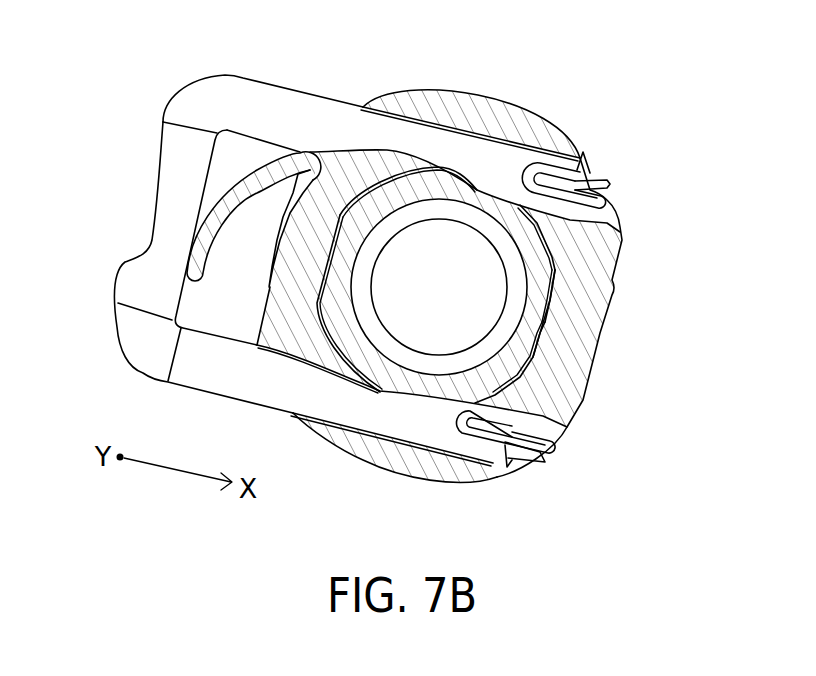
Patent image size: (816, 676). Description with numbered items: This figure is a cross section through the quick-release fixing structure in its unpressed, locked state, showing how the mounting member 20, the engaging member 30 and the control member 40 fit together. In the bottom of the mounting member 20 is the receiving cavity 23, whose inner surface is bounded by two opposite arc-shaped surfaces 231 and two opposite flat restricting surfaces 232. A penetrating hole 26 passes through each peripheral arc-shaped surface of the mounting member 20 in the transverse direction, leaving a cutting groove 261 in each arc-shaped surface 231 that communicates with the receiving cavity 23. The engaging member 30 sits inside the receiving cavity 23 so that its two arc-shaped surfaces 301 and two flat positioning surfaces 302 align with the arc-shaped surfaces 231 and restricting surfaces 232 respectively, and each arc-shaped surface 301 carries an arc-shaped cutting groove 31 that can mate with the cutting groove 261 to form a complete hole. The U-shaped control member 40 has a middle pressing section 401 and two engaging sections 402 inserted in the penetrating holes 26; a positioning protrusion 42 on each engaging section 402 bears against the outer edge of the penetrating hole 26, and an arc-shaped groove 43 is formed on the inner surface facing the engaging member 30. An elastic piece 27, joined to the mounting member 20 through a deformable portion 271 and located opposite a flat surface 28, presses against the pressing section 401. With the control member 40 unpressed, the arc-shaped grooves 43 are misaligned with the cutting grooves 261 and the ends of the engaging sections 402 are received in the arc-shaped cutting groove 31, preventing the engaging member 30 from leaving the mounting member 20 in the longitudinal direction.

The mounting member 20 is at (544, 125).
The receiving cavity 23 is at (698, 285).
The arc-shaped surfaces 231 is at (546, 358).
The restricting surfaces 232 is at (549, 315).
The penetrating hole 26 is at (545, 140).
The cutting groove 261 is at (423, 166).
The elastic piece 27 is at (195, 263).
The deformable portion 271 is at (301, 150).
The flat surface 28 is at (268, 254).
The engaging member 30 is at (543, 258).
The arc-shaped surfaces 301 is at (493, 400).
The positioning surfaces 302 is at (545, 262).
The arc-shaped cutting groove 31 is at (443, 180).
The control member 40 is at (163, 117).
The pressing section 401 is at (168, 224).
The engaging sections 402 is at (484, 147).
The positioning protrusion 42 is at (590, 172).
The arc-shaped groove 43 is at (363, 148).